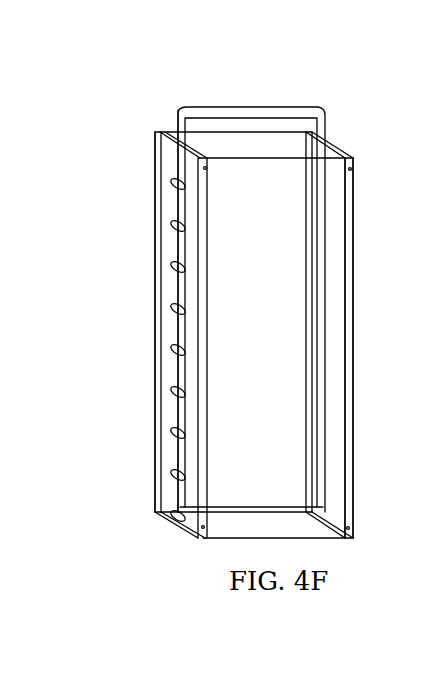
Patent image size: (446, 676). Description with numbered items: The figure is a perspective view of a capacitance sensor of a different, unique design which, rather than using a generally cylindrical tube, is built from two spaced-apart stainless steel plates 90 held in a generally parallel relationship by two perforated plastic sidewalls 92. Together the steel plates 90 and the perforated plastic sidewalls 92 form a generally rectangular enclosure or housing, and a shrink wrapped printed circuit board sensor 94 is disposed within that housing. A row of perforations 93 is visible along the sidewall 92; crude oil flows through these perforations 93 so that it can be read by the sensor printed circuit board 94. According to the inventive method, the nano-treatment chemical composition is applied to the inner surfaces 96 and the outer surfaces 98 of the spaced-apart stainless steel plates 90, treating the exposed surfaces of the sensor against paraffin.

The stainless steel plates 90 is at (332, 185).
The perforated plastic sidewalls 92 is at (170, 167).
The perforation 93 is at (175, 230).
The shrink wrapped printed circuit board sensor 94 is at (242, 125).
The inner surfaces 96 is at (178, 133).
The outer surfaces 98 is at (277, 339).